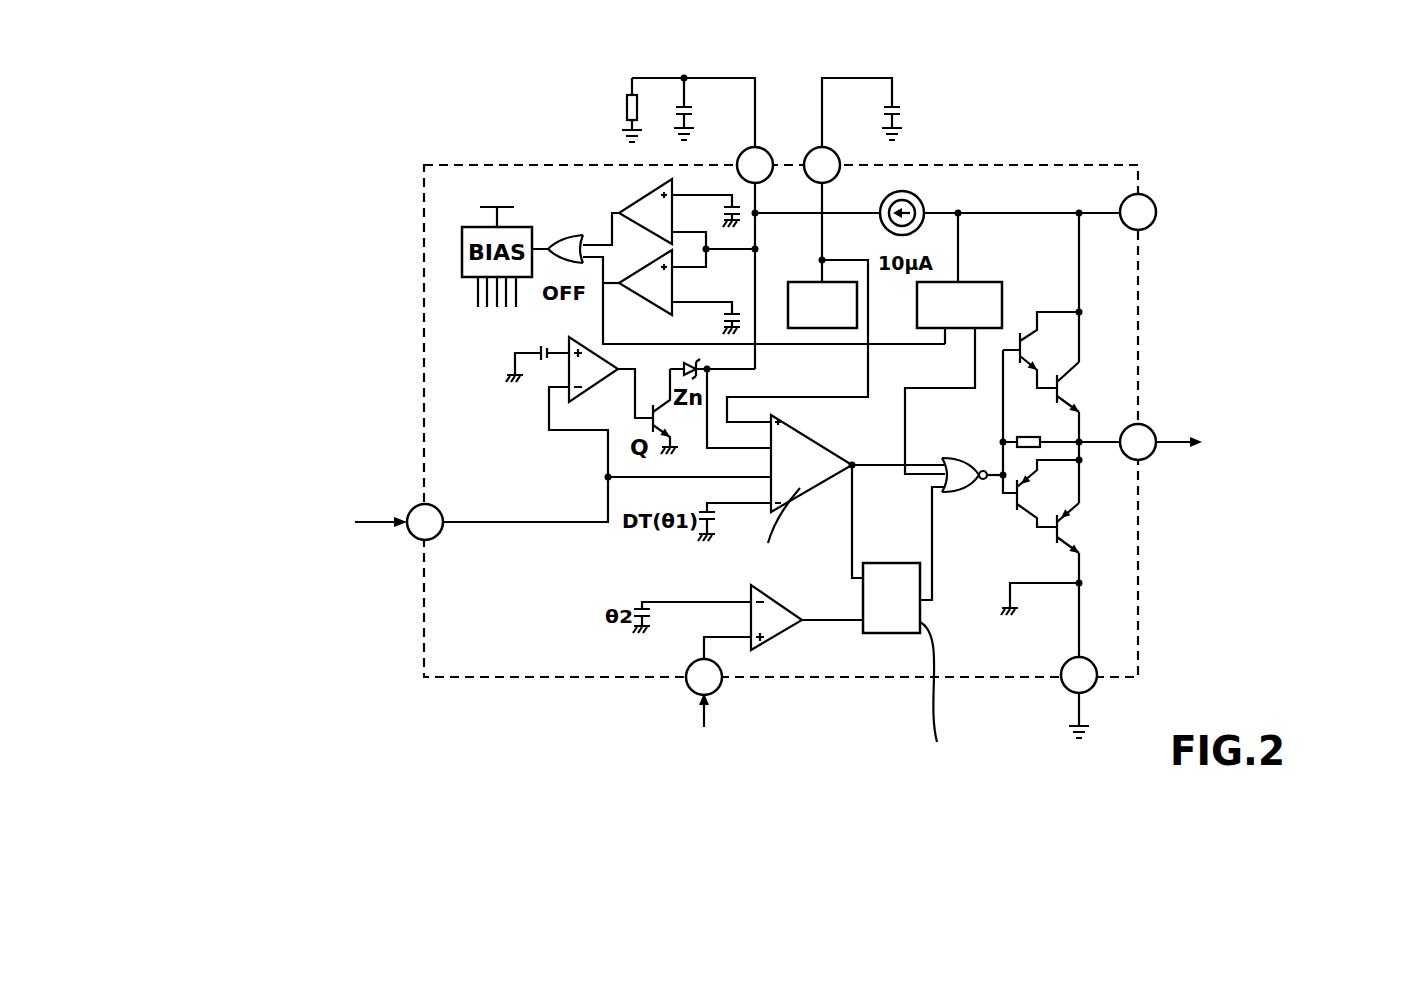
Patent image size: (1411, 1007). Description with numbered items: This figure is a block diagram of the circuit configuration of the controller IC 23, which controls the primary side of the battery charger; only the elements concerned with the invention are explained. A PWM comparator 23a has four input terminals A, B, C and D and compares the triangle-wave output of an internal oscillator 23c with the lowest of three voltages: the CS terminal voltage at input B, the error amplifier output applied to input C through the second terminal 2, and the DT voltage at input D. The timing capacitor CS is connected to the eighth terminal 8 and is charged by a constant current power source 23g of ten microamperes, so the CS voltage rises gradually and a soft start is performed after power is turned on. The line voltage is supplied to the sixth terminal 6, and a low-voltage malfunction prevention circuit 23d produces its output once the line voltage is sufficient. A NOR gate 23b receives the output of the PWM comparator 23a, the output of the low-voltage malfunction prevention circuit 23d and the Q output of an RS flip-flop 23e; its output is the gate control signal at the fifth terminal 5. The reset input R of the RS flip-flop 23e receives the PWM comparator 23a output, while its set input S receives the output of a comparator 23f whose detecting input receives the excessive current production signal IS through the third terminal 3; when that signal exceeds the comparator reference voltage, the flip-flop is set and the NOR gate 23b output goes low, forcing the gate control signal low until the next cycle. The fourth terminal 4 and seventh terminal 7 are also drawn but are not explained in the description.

The controller IC 23 is at (446, 165).
The PWM comparator 23a is at (797, 432).
The NOR gate 23b is at (959, 461).
The internal oscillator 23c is at (788, 303).
The low-voltage malfunction prevention circuit 23d is at (980, 282).
The RS flip-flop 23e is at (887, 563).
The comparator 23f is at (775, 633).
The constant current power source 23g is at (921, 198).
The second terminal 2 is at (281, 513).
The third terminal 3 is at (690, 721).
The fourth terminal 4 is at (1079, 697).
The fifth terminal 5 is at (1250, 388).
The sixth terminal 6 is at (1163, 212).
The seventh terminal 7 is at (853, 130).
The eighth terminal 8 is at (712, 129).